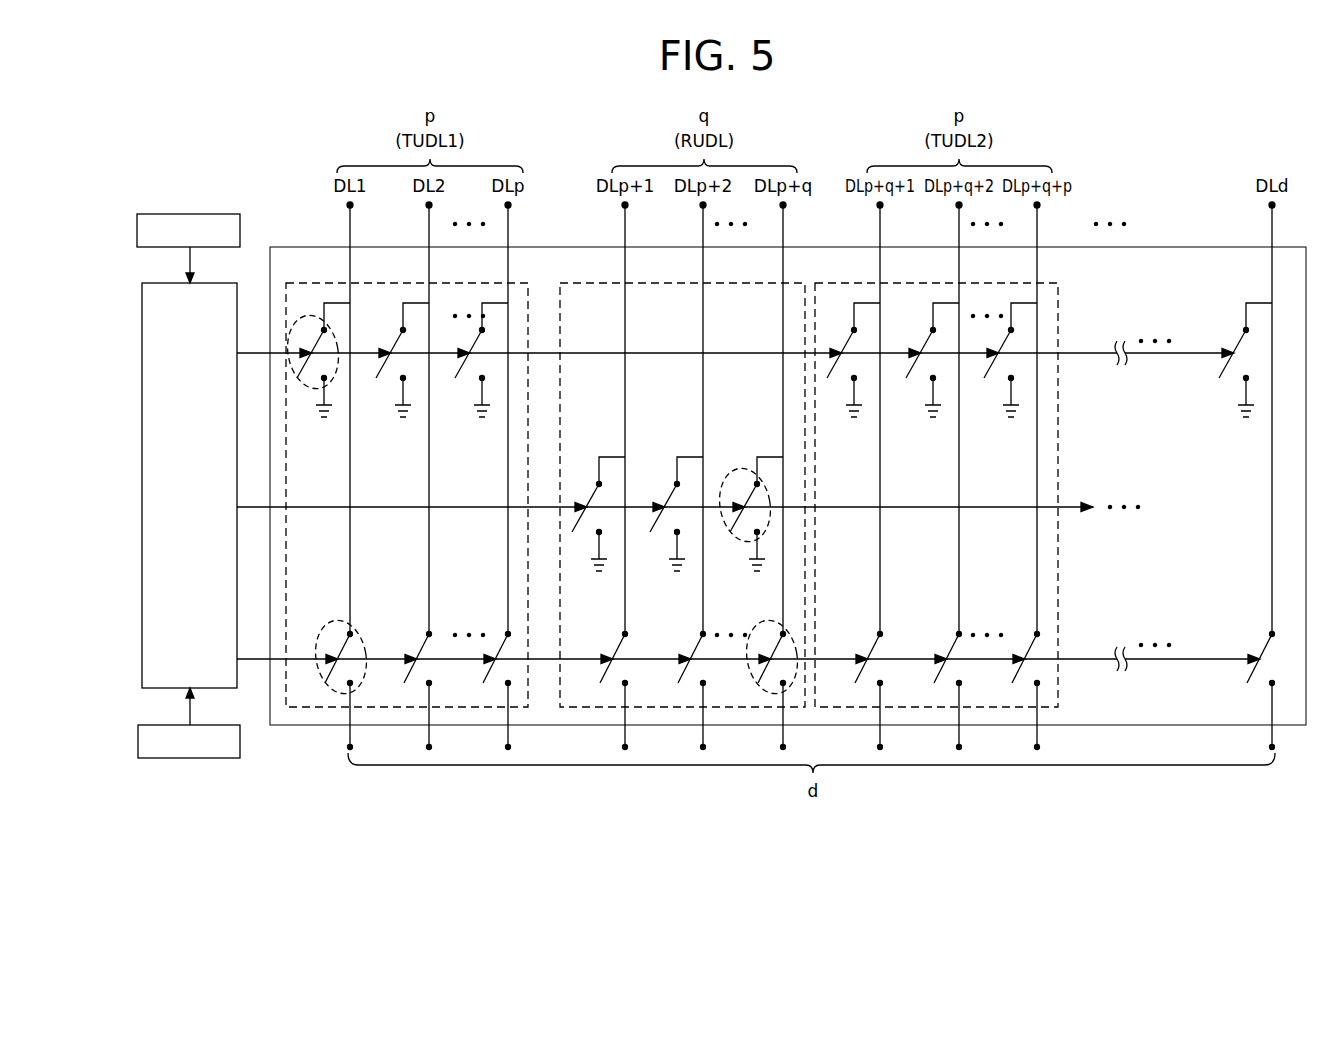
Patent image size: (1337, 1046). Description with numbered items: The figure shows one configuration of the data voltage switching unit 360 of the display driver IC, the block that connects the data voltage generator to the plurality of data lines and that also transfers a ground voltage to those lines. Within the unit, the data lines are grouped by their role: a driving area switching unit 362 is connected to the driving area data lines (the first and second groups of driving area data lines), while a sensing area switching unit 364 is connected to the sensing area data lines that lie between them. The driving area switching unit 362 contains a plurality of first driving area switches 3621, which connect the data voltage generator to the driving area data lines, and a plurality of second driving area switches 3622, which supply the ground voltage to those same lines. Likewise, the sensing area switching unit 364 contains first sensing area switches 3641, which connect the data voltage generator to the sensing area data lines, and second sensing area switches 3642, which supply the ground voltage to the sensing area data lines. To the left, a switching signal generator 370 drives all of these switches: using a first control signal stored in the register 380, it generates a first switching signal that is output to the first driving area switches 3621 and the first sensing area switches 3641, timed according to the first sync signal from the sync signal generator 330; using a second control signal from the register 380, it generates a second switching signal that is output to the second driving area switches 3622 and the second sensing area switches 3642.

The sync signal generator 330 is at (161, 759).
The data voltage switching unit 360 is at (1160, 247).
The driving area switching unit 362 is at (527, 284).
The sensing area switching unit 364 is at (804, 284).
The switching signal generator 370 is at (229, 283).
The register 380 is at (226, 214).
The first driving area switches 3621 is at (322, 636).
The second driving area switches 3622 is at (306, 388).
The first sensing area switches 3641 is at (752, 646).
The second sensing area switches 3642 is at (737, 471).